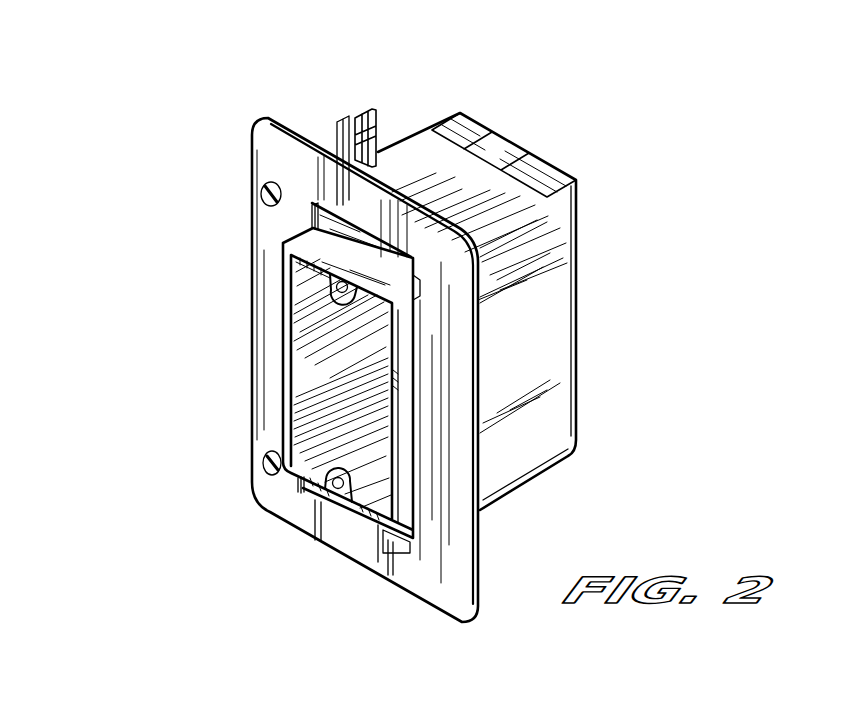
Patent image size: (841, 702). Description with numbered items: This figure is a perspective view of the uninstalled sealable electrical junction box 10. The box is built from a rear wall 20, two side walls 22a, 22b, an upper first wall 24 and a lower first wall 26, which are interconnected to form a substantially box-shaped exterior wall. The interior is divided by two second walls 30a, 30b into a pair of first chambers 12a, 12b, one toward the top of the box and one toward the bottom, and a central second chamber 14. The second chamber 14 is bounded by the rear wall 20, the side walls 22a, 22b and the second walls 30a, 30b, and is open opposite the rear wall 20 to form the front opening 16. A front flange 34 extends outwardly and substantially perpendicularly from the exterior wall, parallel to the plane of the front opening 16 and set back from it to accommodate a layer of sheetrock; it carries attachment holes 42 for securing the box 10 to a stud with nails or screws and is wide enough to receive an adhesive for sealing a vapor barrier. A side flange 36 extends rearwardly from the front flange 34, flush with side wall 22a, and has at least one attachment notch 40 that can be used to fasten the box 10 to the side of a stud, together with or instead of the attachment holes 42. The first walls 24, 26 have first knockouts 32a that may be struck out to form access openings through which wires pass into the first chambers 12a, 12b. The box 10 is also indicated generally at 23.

The sealable electrical junction box 10 is at (286, 334).
The first chamber 12a is at (362, 518).
The first chamber 12b is at (385, 255).
The second chamber 14 is at (338, 398).
The front opening 16 is at (339, 425).
The rear wall 20 is at (578, 290).
The side wall 22a is at (310, 387).
The side wall 22b is at (536, 345).
The box interior 23 is at (420, 170).
The upper first wall 24 is at (488, 205).
The lower first wall 26 is at (380, 537).
The second wall 30a is at (296, 485).
The second wall 30b is at (318, 210).
The first knockouts 32a is at (526, 180).
The front flange 34 is at (456, 264).
The side flange 36 is at (335, 137).
The attachment notch 40 is at (384, 127).
The attachment holes 42 is at (260, 197).